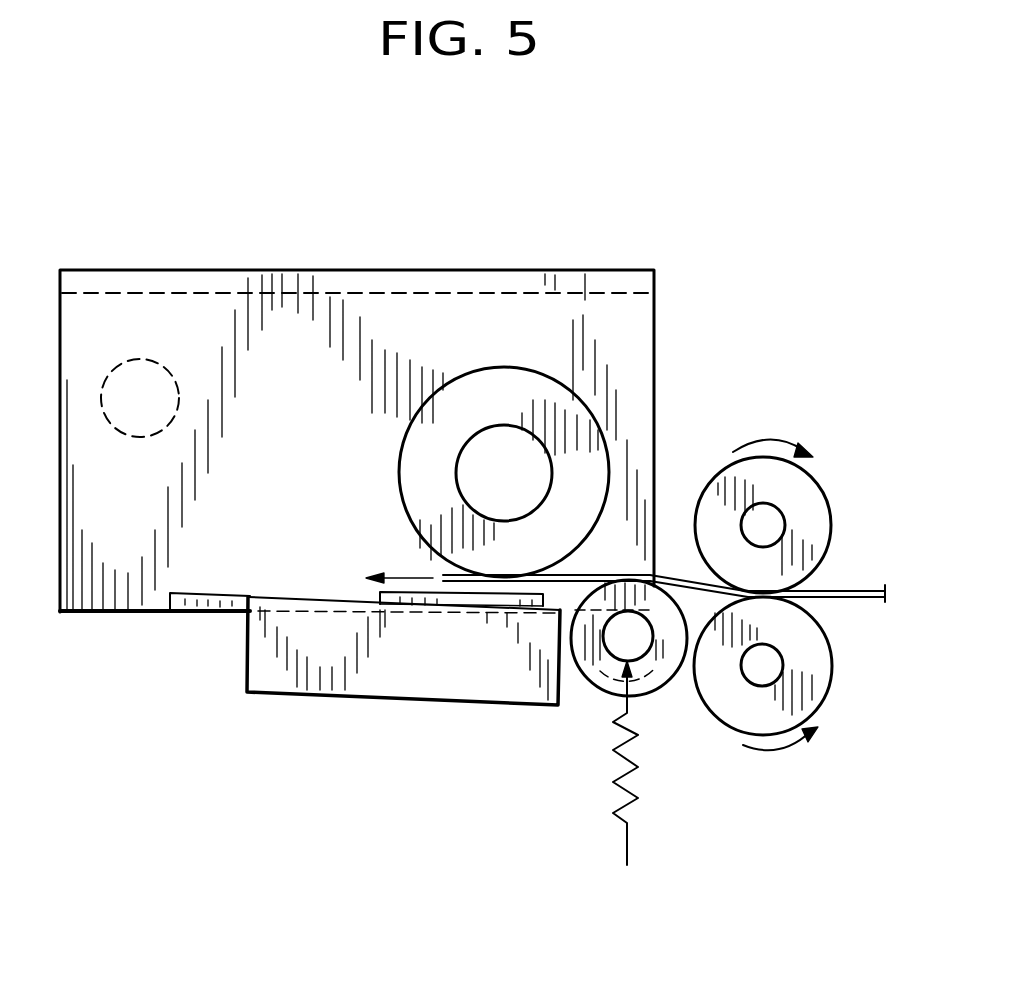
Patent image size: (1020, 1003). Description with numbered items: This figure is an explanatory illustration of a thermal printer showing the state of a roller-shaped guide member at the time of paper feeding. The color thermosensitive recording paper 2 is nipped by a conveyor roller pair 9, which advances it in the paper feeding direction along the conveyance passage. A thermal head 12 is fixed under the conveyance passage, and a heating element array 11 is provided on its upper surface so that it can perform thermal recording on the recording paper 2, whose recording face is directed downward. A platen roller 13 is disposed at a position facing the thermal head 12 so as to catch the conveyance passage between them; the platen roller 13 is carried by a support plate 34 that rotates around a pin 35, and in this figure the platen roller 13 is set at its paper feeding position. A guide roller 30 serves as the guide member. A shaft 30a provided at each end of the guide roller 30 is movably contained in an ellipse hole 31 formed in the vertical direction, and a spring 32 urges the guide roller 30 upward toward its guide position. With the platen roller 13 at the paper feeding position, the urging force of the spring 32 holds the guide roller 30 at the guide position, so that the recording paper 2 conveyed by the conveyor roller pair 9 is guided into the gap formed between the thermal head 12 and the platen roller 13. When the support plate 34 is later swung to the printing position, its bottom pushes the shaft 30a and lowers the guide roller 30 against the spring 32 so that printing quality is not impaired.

The recording paper 2 is at (856, 591).
The conveyor roller pair 9 is at (828, 464).
The heating element array 11 is at (505, 600).
The thermal head 12 is at (283, 716).
The platen roller 13 is at (505, 367).
The guide roller 30 is at (678, 705).
The shaft 30a is at (653, 633).
The ellipse hole 31 is at (600, 674).
The spring 32 is at (627, 848).
The support plate 34 is at (388, 244).
The pin 35 is at (110, 374).